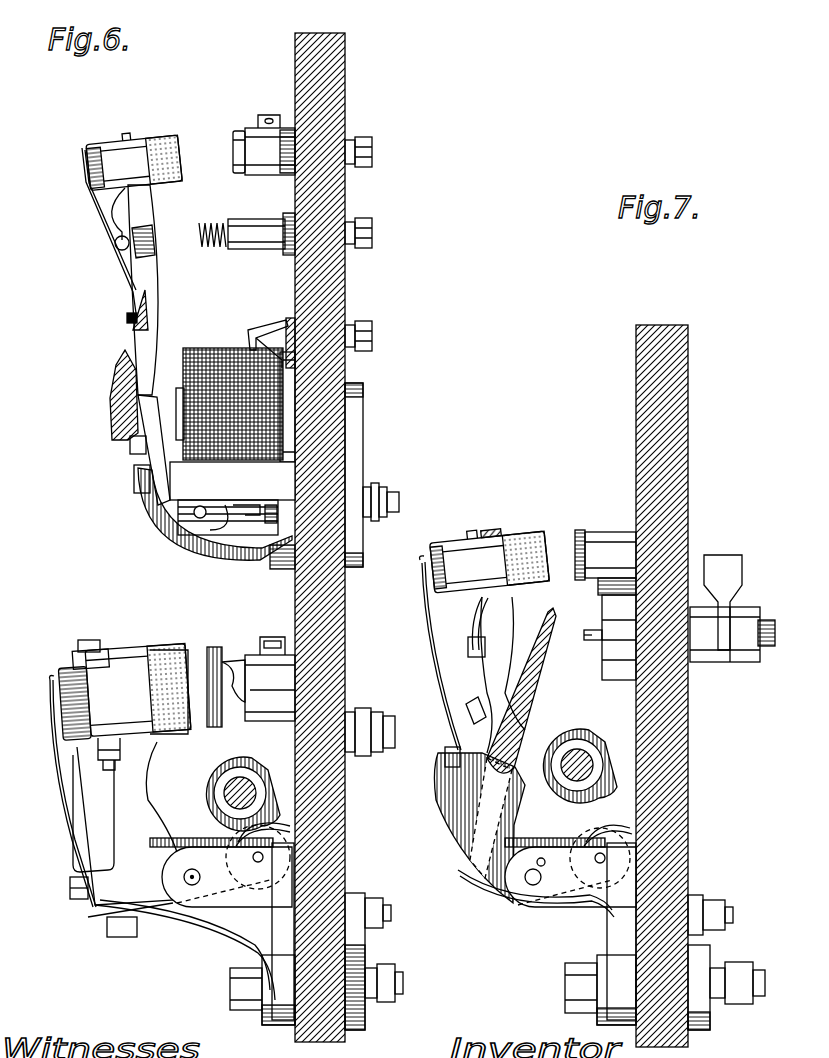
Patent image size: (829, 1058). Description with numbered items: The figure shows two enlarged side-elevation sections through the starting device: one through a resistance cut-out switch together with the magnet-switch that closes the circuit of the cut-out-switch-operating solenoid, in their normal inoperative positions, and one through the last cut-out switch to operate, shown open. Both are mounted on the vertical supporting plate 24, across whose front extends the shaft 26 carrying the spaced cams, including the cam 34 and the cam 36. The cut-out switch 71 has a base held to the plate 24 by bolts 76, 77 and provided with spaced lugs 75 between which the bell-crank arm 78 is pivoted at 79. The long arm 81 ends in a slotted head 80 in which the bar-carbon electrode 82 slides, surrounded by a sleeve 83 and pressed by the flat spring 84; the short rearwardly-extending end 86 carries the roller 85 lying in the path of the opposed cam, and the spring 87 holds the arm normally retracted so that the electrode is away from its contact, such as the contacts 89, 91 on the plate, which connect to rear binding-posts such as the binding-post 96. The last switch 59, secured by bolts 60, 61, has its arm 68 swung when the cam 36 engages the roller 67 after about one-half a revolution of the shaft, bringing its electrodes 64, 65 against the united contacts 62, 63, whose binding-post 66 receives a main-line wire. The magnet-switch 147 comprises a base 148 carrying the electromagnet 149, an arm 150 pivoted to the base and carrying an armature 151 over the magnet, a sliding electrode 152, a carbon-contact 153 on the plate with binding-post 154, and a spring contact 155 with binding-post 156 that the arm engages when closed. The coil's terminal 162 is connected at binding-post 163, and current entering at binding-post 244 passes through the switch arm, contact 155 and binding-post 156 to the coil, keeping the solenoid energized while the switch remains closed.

In FIG. 6, the supporting plate 24 is at (346, 368).
In FIG. 7, the supporting plate 24 is at (688, 502).
In FIG. 6, the shaft 26 is at (243, 790).
In FIG. 6, the cam 34 is at (210, 772).
In FIG. 7, the cam 36 is at (572, 762).
In FIG. 7, the switch 59 is at (487, 828).
In FIG. 7, the bolt 60 is at (575, 995).
In FIG. 7, the bolt 61 is at (728, 910).
In FIG. 7, the contact 62 is at (616, 682).
In FIG. 7, the contact 63 is at (603, 532).
In FIG. 7, the electrode 64 is at (548, 648).
In FIG. 7, the electrode 65 is at (518, 530).
In FIG. 7, the binding-post 66 is at (770, 665).
In FIG. 7, the roller 67 is at (632, 845).
In FIG. 7, the arm 68 is at (490, 612).
In FIG. 6, the switch 71 is at (276, 1022).
In FIG. 6, the lug 75 is at (238, 925).
In FIG. 6, the bolt 76 is at (386, 916).
In FIG. 6, the bolt 77 is at (403, 978).
In FIG. 6, the arm 78 is at (135, 903).
In FIG. 6, the pivot 79 is at (188, 886).
In FIG. 6, the slotted head 80 is at (126, 648).
In FIG. 6, the long arm 81 is at (122, 786).
In FIG. 6, the electrode 82 is at (168, 650).
In FIG. 6, the sleeve 83 is at (86, 642).
In FIG. 6, the flat spring 84 is at (52, 762).
In FIG. 6, the roller 85 is at (290, 842).
In FIG. 6, the short rearwardly-extending end 86 is at (182, 840).
In FIG. 6, the spring 87 is at (210, 915).
In FIG. 6, the contact 89 is at (213, 647).
In FIG. 6, the contact 91 is at (230, 660).
In FIG. 6, the binding-post 96 is at (390, 722).
In FIG. 6, the magnet-switch 147 is at (104, 320).
In FIG. 6, the base 148 is at (288, 538).
In FIG. 6, the electromagnet 149 is at (232, 441).
In FIG. 6, the arm 150 is at (150, 348).
In FIG. 6, the armature 151 is at (155, 398).
In FIG. 6, the sliding electrode 152 is at (160, 135).
In FIG. 6, the carbon-contact 153 is at (228, 130).
In FIG. 6, the binding-post 154 is at (373, 142).
In FIG. 6, the spring contact 155 is at (212, 250).
In FIG. 6, the binding-post 156 is at (374, 232).
In FIG. 6, the terminal 162 is at (268, 328).
In FIG. 6, the binding-post 163 is at (373, 330).
In FIG. 6, the binding-post 244 is at (399, 502).